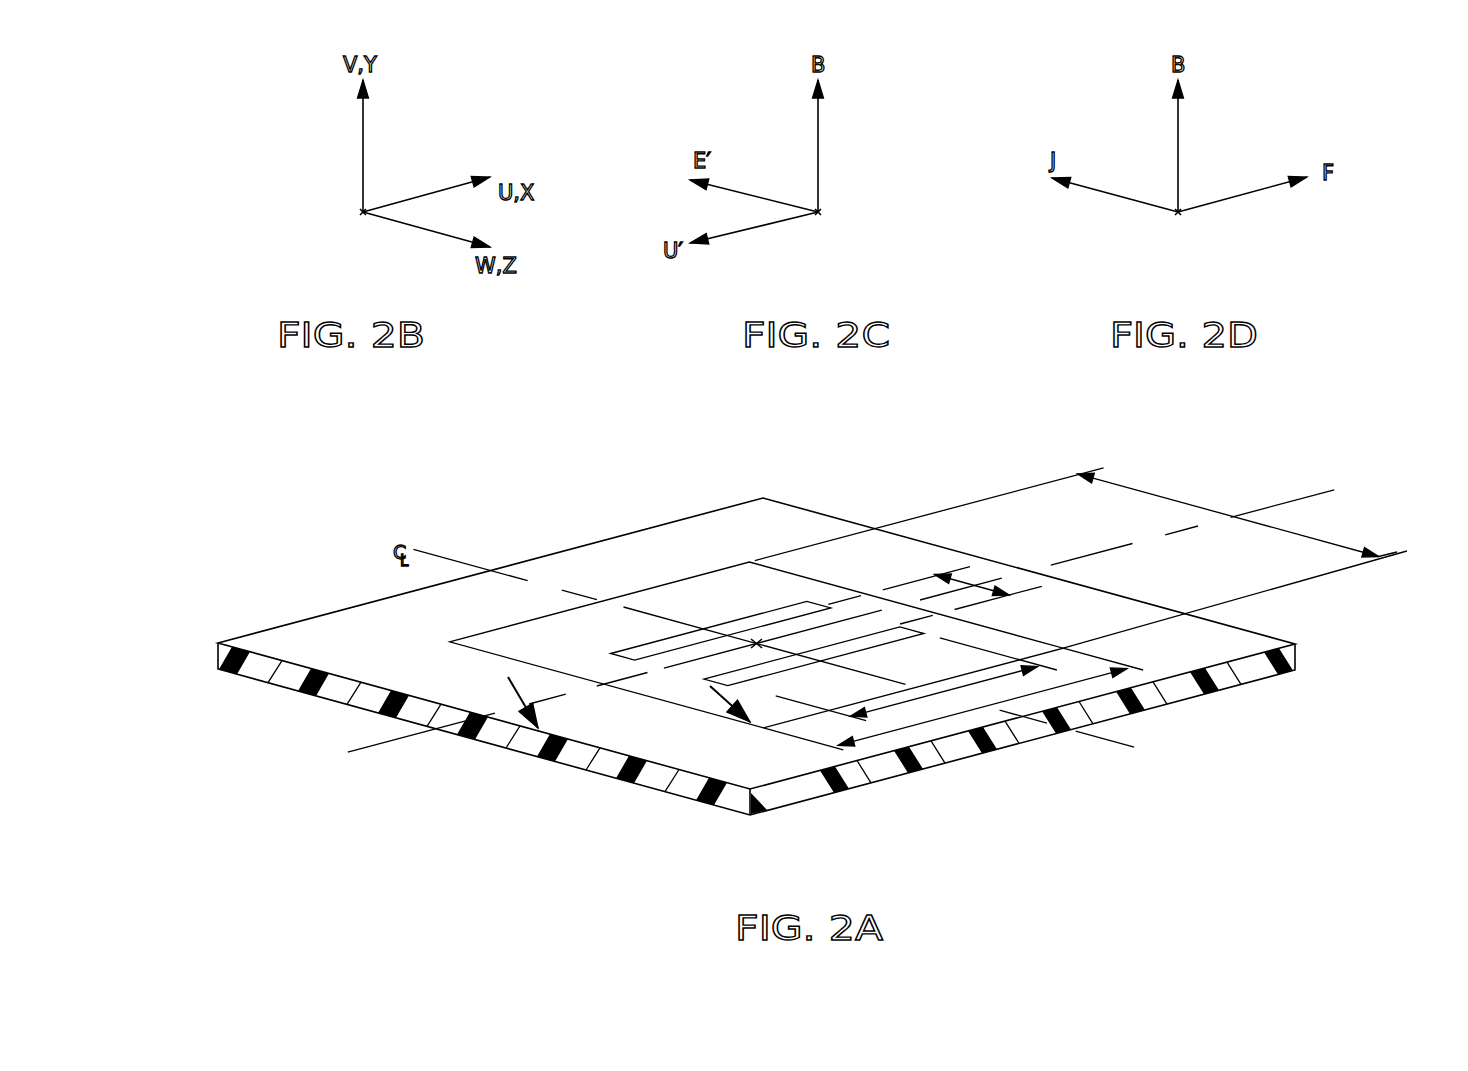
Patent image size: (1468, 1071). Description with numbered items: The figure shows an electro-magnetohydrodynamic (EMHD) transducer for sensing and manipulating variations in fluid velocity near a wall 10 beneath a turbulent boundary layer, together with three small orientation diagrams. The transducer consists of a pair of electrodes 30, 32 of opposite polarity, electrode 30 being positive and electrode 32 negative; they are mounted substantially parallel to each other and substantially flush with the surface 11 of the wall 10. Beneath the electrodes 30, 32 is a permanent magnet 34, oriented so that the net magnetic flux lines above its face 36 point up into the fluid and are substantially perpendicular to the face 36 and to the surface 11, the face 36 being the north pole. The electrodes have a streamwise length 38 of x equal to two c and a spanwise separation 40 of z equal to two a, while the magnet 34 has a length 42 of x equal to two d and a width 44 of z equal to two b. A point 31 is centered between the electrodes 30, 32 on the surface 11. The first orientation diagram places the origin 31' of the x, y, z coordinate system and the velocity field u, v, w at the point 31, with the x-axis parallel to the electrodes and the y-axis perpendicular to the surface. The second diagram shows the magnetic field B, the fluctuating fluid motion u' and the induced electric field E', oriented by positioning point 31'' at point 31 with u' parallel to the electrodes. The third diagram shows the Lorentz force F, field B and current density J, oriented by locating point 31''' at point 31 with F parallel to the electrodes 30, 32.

In FIG. 2A, the wall 10 is at (595, 772).
In FIG. 2A, the surface 11 is at (508, 677).
In FIG. 2A, the electrode 30 is at (642, 660).
In FIG. 2A, the point 31 is at (739, 618).
In FIG. 2B, the origin 31' is at (321, 219).
In FIG. 2C, the point 31'' is at (863, 218).
In FIG. 2D, the point 31''' is at (1211, 239).
In FIG. 2A, the electrode 32 is at (720, 670).
In FIG. 2A, the permanent magnet 34 is at (677, 703).
In FIG. 2A, the face 36 is at (710, 686).
In FIG. 2A, the streamwise length 38 is at (1078, 740).
In FIG. 2A, the spanwise separation 40 is at (953, 578).
In FIG. 2A, the length 42 is at (890, 730).
In FIG. 2A, the width 44 is at (1180, 502).